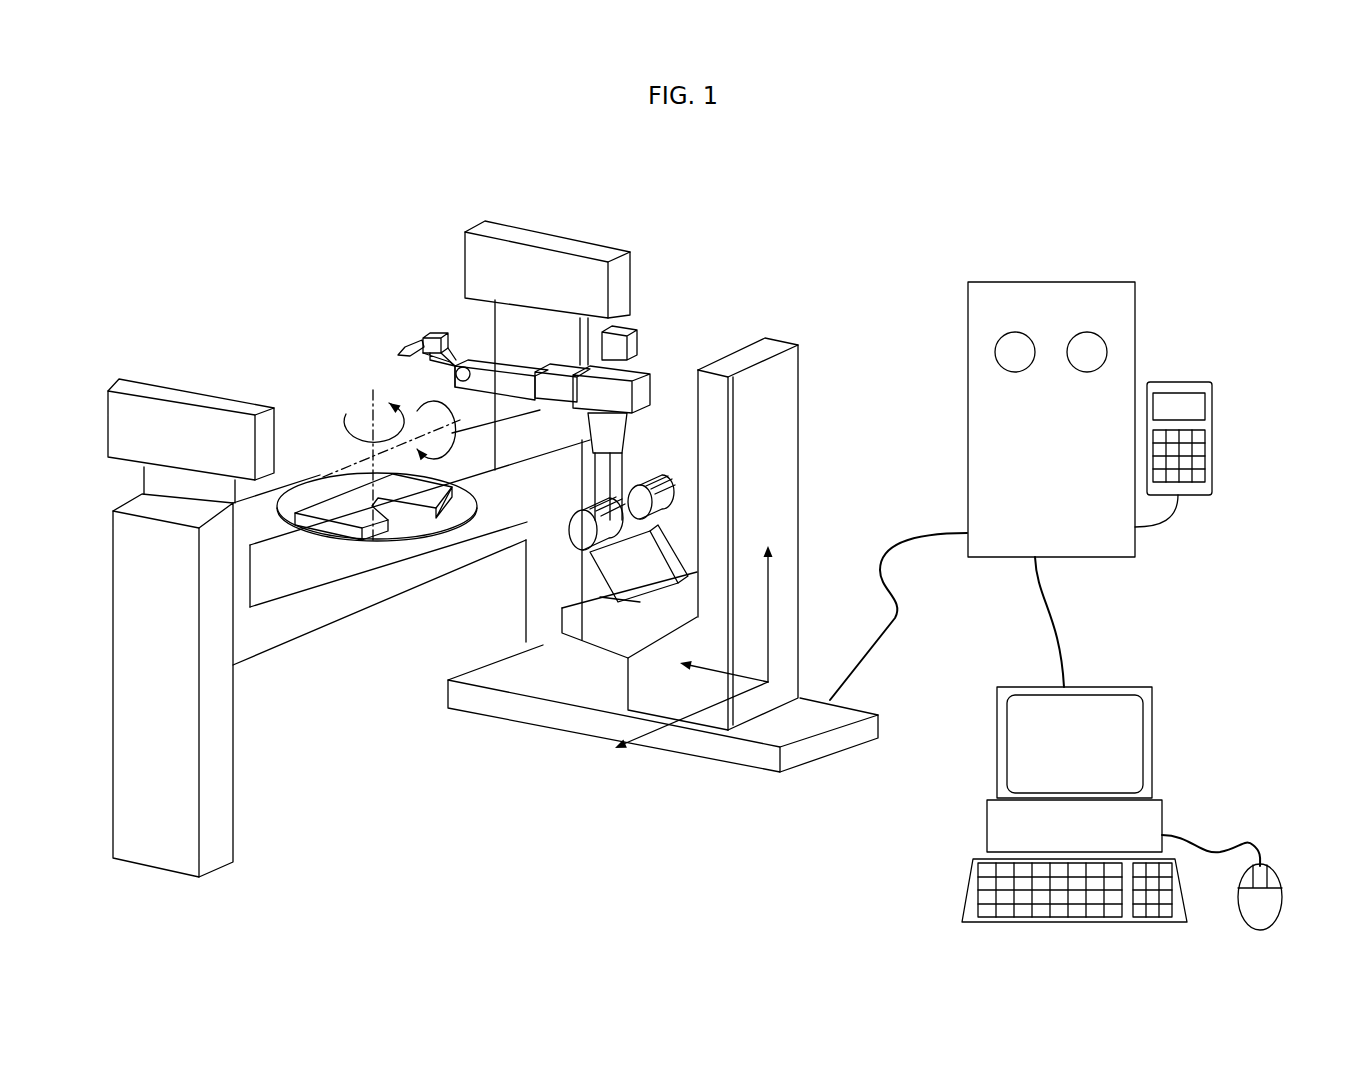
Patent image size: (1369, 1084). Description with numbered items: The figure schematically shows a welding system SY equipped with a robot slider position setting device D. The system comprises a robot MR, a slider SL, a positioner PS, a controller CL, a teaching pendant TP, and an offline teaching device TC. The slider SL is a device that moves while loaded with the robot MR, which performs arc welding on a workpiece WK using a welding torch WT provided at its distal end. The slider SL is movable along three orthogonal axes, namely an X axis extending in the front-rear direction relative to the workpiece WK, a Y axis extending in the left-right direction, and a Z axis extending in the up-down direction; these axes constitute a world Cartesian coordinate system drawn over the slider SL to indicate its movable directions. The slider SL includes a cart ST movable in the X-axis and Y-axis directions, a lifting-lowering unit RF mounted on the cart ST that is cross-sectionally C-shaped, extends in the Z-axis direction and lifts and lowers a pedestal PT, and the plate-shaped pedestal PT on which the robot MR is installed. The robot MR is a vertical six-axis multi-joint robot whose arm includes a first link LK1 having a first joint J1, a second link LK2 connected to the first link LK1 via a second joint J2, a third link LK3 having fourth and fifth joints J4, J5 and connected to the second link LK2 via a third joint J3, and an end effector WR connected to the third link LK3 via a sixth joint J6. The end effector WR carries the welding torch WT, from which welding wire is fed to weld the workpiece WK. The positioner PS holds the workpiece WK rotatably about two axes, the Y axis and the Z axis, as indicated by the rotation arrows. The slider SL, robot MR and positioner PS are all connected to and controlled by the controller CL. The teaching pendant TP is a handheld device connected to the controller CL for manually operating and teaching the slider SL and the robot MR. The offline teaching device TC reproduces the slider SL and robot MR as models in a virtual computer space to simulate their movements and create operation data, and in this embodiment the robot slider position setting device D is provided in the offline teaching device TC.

The welding system SY is at (720, 256).
The positioner PS is at (313, 622).
The workpiece WK is at (436, 492).
The robot MR is at (636, 377).
The first link LK1 is at (572, 565).
The second link LK2 is at (587, 483).
The third link LK3 is at (557, 373).
The first joint J1 is at (566, 592).
The second joint J2 is at (654, 475).
The third joint J3 is at (648, 420).
The fourth joint J4 is at (558, 420).
The fifth joint J5 is at (482, 372).
The sixth joint J6 is at (460, 348).
The end effector WR is at (440, 340).
The welding torch WT is at (410, 340).
The slider SL is at (808, 855).
The pedestal PT is at (597, 645).
The cart ST is at (688, 758).
The lifting-lowering unit RF is at (800, 617).
The X axis X is at (676, 729).
The Y axis Y is at (711, 666).
The Z axis Z is at (768, 598).
The controller CL is at (1127, 306).
The teaching pendant TP is at (1213, 397).
The offline teaching device TC is at (1152, 716).
The robot slider position setting device D is at (1122, 808).